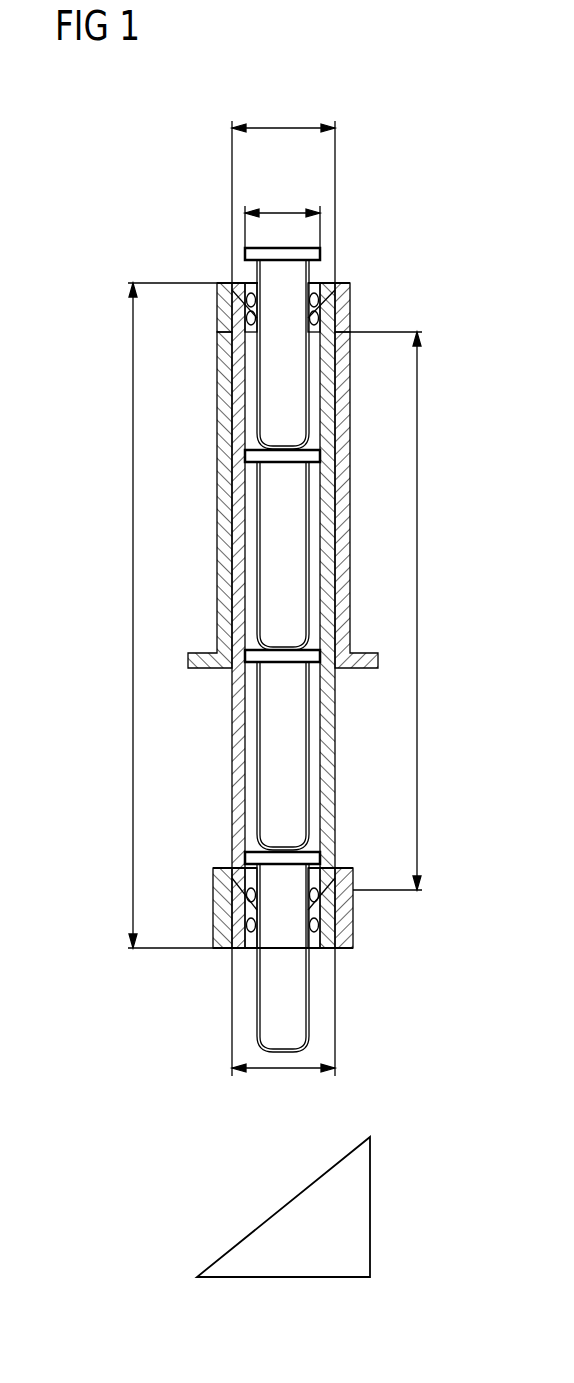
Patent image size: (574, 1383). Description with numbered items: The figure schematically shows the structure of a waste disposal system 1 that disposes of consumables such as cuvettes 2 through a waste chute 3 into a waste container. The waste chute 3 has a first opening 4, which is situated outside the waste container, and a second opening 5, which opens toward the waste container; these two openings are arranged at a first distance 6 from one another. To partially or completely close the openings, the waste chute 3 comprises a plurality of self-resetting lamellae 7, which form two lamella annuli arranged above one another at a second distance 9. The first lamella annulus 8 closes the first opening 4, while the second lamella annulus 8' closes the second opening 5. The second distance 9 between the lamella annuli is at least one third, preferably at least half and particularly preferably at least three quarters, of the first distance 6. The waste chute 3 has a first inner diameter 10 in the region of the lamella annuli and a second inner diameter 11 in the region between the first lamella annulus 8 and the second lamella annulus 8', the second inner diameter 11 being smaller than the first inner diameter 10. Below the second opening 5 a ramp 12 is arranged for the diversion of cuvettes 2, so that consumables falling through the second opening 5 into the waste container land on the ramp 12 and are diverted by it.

The waste disposal system 1 is at (160, 190).
The cuvettes 2 is at (295, 415).
The waste chute 3 is at (232, 432).
The first opening 4 is at (332, 258).
The second opening 5 is at (243, 960).
The first distance 6 is at (133, 615).
The self-resetting lamellae 7 is at (232, 299).
The first lamella annulus 8 is at (310, 294).
The second lamella annulus 8' is at (264, 908).
The second distance 9 is at (417, 615).
The first inner diameter 10 is at (287, 125).
The second inner diameter 11 is at (287, 209).
The ramp 12 is at (370, 1215).